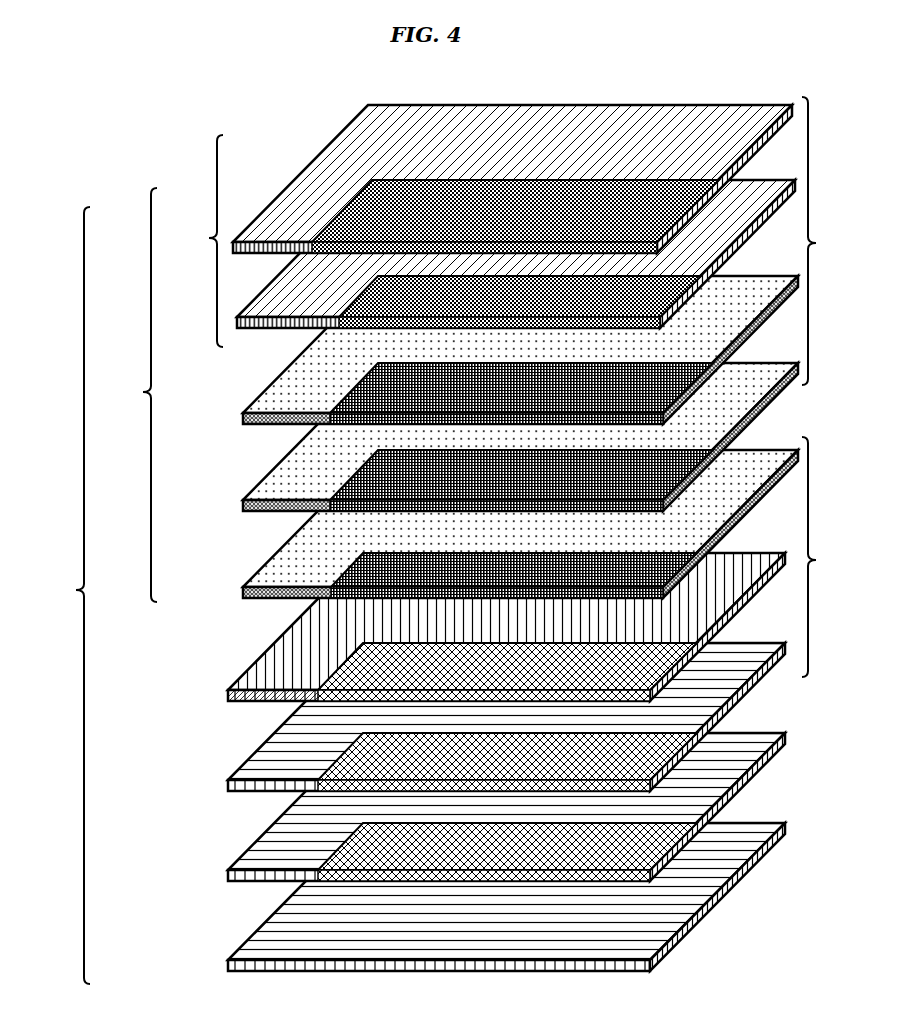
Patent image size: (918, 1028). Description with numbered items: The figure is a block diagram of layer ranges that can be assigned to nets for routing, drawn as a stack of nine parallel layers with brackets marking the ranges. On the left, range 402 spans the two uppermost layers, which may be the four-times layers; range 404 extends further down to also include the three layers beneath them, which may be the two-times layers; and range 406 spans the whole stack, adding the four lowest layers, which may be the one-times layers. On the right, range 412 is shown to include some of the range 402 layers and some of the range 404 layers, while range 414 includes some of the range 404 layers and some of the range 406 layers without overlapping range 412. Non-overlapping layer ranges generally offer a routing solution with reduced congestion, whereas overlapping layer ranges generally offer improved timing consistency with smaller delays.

The range 402 is at (475, 232).
The range 404 is at (477, 362).
The range 406 is at (445, 547).
The range 412 is at (511, 277).
The range 414 is at (845, 574).